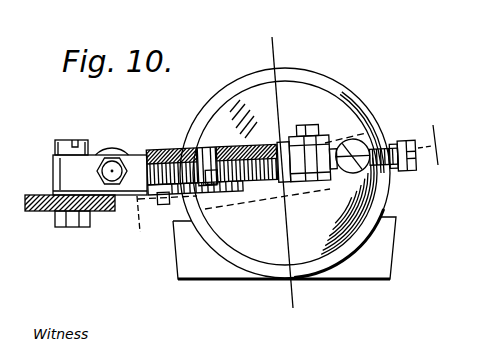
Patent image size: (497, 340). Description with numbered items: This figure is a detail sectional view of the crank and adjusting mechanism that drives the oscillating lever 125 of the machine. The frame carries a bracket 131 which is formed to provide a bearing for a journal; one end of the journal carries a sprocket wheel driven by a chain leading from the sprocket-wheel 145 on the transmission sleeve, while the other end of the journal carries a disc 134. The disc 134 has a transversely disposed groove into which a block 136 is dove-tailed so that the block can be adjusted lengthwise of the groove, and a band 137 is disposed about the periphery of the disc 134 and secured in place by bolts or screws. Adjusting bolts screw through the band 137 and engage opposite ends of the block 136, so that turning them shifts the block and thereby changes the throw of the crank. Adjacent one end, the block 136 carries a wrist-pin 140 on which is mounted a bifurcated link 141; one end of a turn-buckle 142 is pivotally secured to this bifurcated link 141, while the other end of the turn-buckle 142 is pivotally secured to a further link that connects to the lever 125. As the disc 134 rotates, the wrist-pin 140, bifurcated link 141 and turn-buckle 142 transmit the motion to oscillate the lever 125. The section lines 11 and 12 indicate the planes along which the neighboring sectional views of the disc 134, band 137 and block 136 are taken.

The section line 11- 11 is at (283, 175).
The section line 12- 12 is at (287, 183).
The lever 125 is at (33, 211).
The bracket 131 is at (176, 273).
The disc 134 is at (316, 100).
The block 136 is at (262, 197).
The band 137 is at (272, 278).
The wrist-pin 140 is at (395, 132).
The bifurcated link 141 is at (371, 119).
The turn-buckle 142 is at (220, 119).
The sprocket-wheel 145 is at (99, 157).